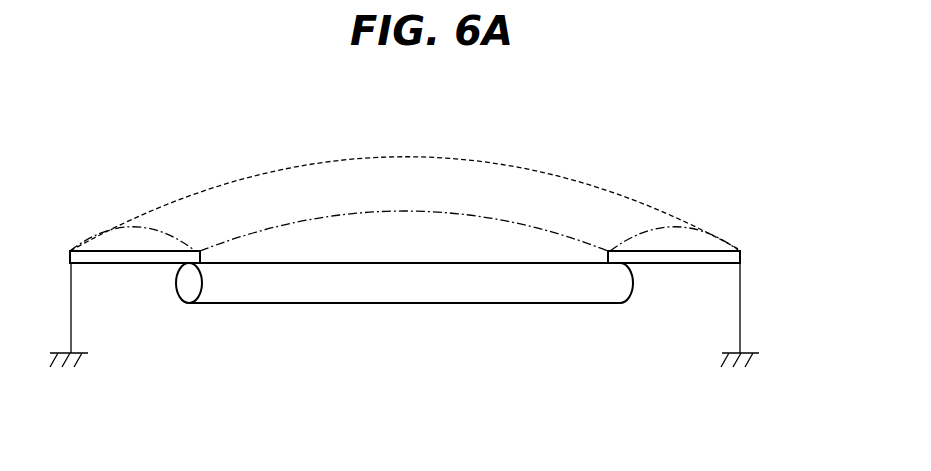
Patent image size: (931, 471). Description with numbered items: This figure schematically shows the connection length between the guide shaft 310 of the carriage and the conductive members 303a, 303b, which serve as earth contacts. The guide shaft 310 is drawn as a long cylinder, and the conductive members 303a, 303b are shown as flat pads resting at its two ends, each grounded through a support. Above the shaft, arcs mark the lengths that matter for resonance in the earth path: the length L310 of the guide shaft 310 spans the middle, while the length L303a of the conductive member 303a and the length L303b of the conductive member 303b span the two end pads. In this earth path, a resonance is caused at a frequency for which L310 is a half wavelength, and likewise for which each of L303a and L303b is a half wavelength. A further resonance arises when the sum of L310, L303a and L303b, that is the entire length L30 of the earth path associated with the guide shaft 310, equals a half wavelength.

The entire length of the earth path L30 is at (405, 157).
The length of the guide shaft L310 is at (395, 212).
The length of the conductive member L303a is at (137, 226).
The length of the conductive member L303b is at (682, 222).
The conductive member 303a is at (133, 263).
The conductive member 303b is at (662, 263).
The guide shaft 310 is at (397, 303).